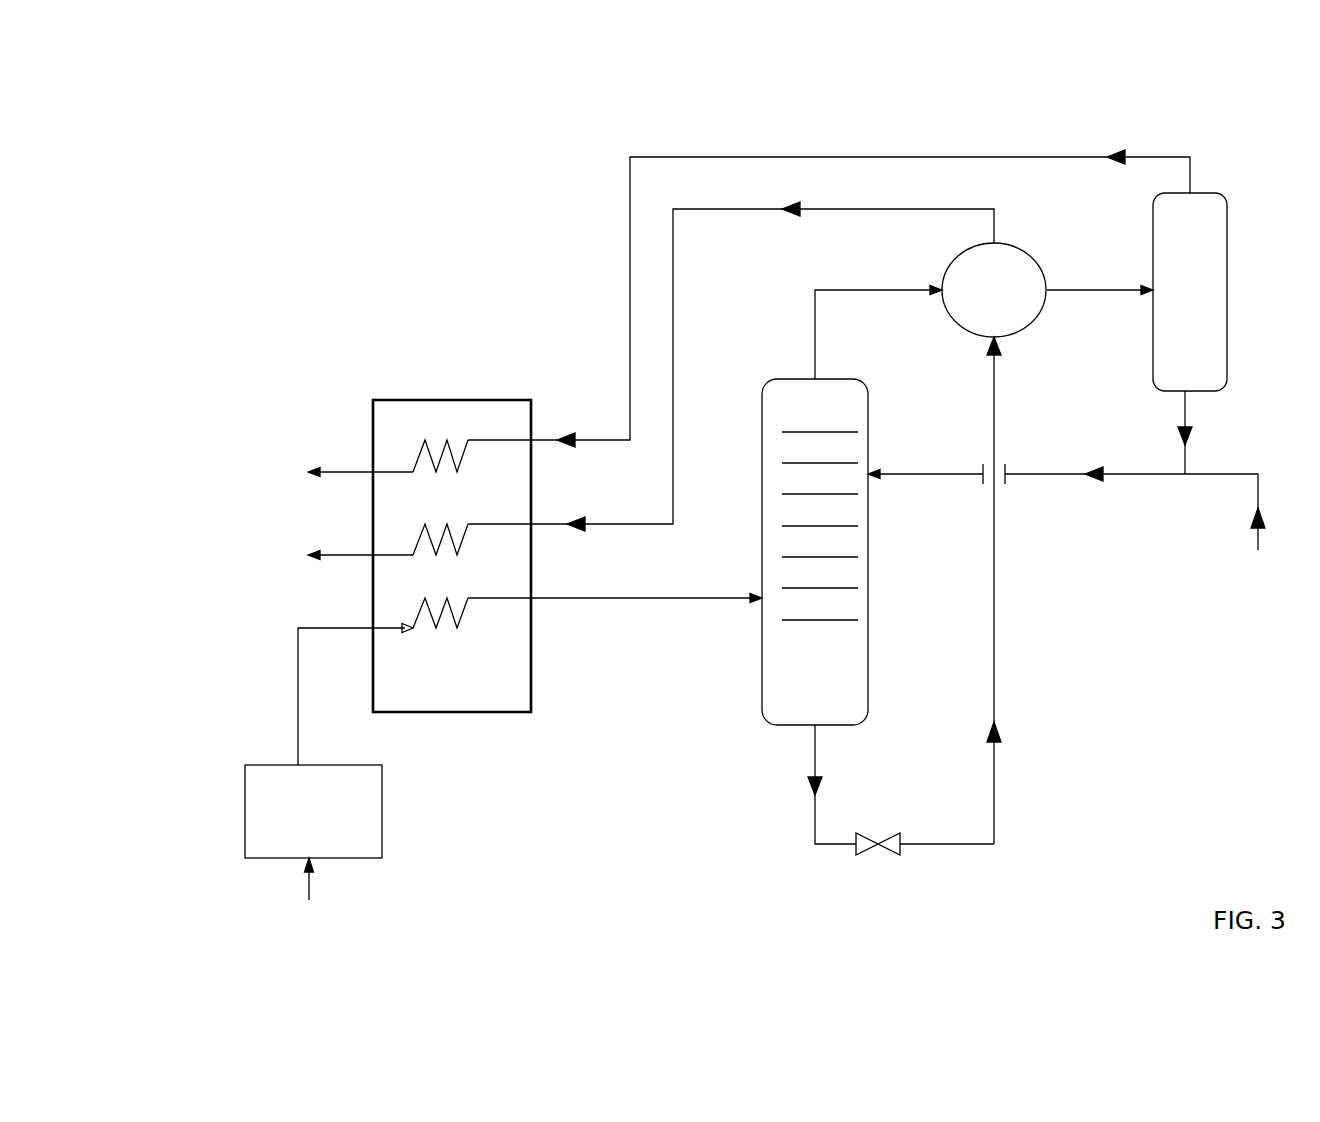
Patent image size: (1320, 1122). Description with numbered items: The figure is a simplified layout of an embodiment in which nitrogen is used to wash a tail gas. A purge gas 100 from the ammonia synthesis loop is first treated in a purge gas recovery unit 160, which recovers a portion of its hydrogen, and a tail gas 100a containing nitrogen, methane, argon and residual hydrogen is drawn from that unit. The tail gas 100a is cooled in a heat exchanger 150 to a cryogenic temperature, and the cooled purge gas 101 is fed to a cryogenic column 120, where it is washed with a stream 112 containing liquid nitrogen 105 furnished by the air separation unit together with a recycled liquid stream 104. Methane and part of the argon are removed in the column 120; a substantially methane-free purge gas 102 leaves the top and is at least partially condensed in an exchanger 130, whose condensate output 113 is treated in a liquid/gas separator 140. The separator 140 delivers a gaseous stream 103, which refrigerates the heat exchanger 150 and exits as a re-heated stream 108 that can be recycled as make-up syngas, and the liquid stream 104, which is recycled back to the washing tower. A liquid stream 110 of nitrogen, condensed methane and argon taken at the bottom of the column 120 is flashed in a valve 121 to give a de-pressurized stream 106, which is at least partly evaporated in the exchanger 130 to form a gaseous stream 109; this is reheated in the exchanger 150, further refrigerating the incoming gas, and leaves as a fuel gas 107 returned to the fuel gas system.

The purge gas 100 is at (307, 899).
The tail gas 100a is at (298, 727).
The purge gas recovery unit 160 is at (382, 815).
The heat exchanger 150 is at (445, 400).
The re-heated stream 108 is at (330, 472).
The fuel gas 107 is at (331, 556).
The cooled purge gas 101 is at (617, 600).
The cryogenic column 120 is at (868, 634).
The methane-free purge gas 102 is at (862, 290).
The heat exchanger 130 is at (1028, 262).
The condensate output 113 is at (1091, 293).
The liquid/gas separator 140 is at (1218, 303).
The gaseous stream 103 is at (680, 157).
The gaseous stream 109 is at (673, 310).
The liquid stream 104 is at (1185, 413).
The washing stream 112 is at (1052, 476).
The liquid nitrogen 105 is at (1261, 532).
The liquid stream 110 is at (817, 760).
The valve 121 is at (878, 847).
The de-pressurized stream 106 is at (993, 757).